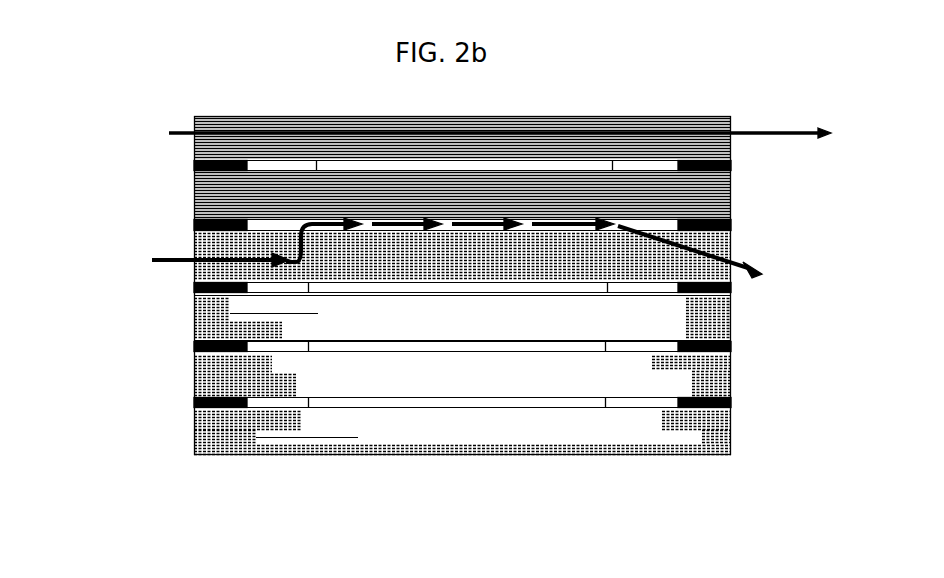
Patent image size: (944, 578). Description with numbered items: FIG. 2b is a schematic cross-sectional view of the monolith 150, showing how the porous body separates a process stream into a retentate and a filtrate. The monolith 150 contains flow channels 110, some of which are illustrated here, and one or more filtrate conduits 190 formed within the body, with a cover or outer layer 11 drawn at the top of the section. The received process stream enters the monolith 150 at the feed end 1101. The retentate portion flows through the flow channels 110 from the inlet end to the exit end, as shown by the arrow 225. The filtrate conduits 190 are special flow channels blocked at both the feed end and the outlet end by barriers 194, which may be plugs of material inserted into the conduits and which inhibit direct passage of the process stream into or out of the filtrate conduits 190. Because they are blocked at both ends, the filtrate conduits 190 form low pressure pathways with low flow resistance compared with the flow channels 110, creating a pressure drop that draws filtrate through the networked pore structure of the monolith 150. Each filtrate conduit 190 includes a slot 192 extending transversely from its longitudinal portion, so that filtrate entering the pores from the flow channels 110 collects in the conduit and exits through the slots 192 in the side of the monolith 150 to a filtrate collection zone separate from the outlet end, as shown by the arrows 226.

The monolith 150 is at (624, 98).
The cover layer 11 is at (732, 125).
The arrow 225 is at (170, 133).
The barrier 194 is at (194, 228).
The arrows 226 is at (160, 264).
The slot 192 is at (731, 314).
The feed end 1101 is at (194, 380).
The flow channel 110 is at (731, 376).
The filtrate conduit 190 is at (503, 348).